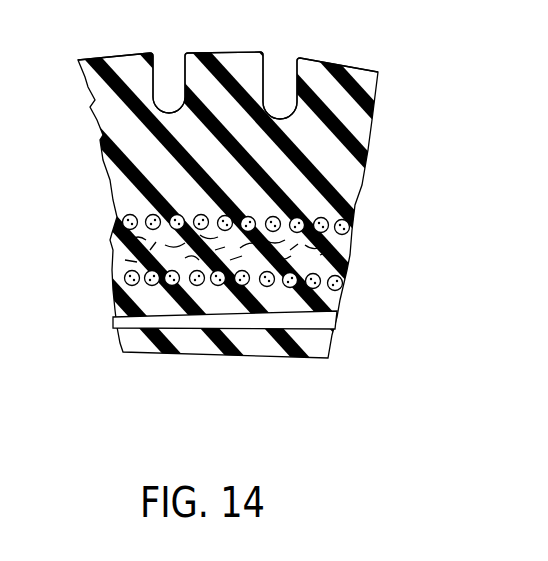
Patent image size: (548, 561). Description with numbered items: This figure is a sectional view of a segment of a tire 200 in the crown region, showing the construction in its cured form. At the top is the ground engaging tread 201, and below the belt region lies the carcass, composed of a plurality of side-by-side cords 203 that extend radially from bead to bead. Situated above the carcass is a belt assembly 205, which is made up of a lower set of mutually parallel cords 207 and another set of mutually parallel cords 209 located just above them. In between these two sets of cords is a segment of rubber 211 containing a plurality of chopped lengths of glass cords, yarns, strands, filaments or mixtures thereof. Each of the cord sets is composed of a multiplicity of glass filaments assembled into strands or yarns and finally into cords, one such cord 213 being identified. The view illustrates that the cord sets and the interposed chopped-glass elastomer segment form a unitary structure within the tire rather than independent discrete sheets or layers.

The tire 200 is at (402, 183).
The ground engaging tread 201 is at (350, 63).
The carcass cords 203 is at (332, 330).
The belt assembly 205 is at (260, 247).
The lower set of mutually parallel cords 207 is at (112, 277).
The upper set of mutually parallel cords 209 is at (114, 217).
The rubber segment containing chopped glass lengths 211 is at (105, 248).
The cord 213 is at (328, 222).